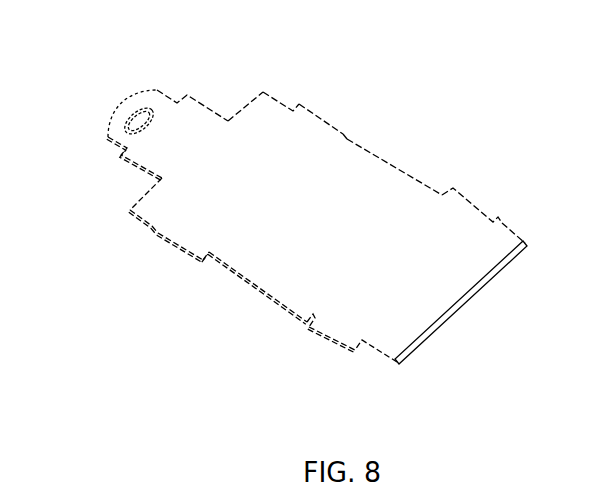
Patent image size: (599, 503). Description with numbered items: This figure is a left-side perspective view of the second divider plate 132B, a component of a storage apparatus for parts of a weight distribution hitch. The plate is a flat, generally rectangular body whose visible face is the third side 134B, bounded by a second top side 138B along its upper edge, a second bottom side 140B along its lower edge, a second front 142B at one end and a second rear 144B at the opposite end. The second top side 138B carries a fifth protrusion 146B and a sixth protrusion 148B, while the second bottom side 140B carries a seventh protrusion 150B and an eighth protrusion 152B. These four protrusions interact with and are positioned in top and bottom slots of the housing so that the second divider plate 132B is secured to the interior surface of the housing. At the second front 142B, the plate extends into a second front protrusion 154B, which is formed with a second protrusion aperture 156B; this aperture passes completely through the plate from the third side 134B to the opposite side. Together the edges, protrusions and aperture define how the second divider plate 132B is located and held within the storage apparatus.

The second divider plate 132B is at (378, 307).
The third side 134B is at (487, 237).
The second top side 138B is at (350, 133).
The second bottom side 140B is at (203, 262).
The second front 142B is at (234, 118).
The second rear 144B is at (463, 302).
The fifth protrusion 146B is at (325, 135).
The sixth protrusion 148B is at (473, 210).
The seventh protrusion 150B is at (168, 235).
The eighth protrusion 152B is at (327, 330).
The second front protrusion 154B is at (180, 132).
The second protrusion aperture 156B is at (132, 119).